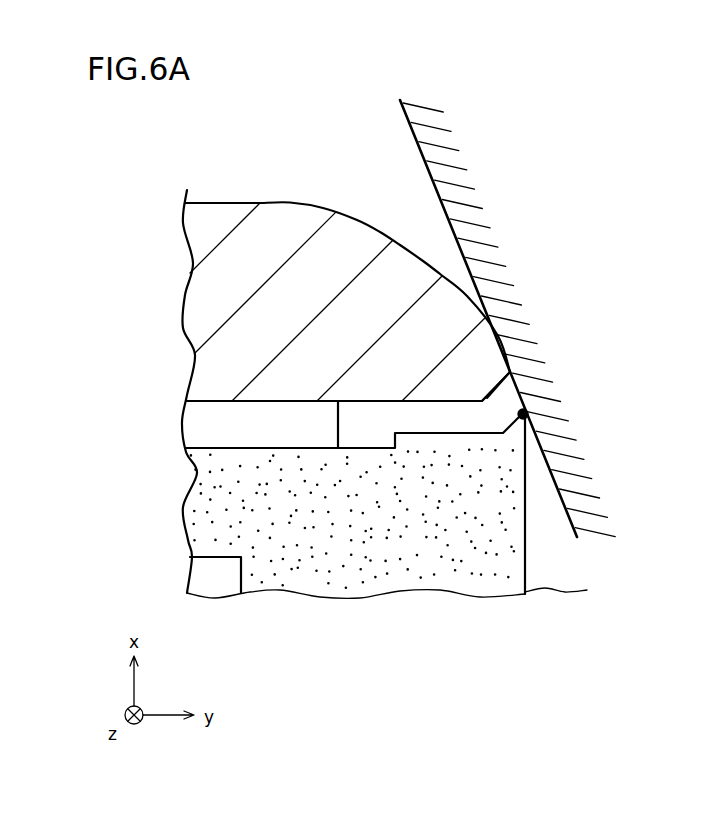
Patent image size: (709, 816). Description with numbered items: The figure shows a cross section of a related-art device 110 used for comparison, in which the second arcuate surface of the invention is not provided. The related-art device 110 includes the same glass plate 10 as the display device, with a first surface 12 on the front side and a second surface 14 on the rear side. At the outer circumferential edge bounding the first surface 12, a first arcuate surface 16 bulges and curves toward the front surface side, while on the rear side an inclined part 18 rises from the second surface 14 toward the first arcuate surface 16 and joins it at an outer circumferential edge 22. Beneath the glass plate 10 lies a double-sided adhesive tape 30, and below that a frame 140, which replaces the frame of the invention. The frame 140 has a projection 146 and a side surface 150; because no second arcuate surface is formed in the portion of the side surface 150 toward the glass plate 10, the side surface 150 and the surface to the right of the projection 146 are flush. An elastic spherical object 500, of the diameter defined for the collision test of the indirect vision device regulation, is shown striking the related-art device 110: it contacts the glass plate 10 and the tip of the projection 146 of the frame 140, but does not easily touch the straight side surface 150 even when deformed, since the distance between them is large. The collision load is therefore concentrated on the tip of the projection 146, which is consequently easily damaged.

The glass plate 10 is at (197, 330).
The first surface 12 is at (226, 202).
The second surface 14 is at (210, 402).
The first arcuate surface 16 is at (398, 243).
The inclined part 18 is at (508, 394).
The outer circumferential edge 22 is at (512, 373).
The double-sided adhesive tape 30 is at (202, 432).
The related-art device 110 is at (392, 721).
The frame 140 is at (325, 583).
The projection 146 is at (525, 425).
The side surface 150 is at (529, 550).
The spherical object 500 is at (455, 175).